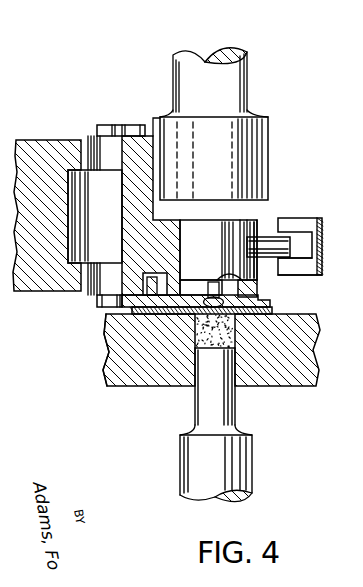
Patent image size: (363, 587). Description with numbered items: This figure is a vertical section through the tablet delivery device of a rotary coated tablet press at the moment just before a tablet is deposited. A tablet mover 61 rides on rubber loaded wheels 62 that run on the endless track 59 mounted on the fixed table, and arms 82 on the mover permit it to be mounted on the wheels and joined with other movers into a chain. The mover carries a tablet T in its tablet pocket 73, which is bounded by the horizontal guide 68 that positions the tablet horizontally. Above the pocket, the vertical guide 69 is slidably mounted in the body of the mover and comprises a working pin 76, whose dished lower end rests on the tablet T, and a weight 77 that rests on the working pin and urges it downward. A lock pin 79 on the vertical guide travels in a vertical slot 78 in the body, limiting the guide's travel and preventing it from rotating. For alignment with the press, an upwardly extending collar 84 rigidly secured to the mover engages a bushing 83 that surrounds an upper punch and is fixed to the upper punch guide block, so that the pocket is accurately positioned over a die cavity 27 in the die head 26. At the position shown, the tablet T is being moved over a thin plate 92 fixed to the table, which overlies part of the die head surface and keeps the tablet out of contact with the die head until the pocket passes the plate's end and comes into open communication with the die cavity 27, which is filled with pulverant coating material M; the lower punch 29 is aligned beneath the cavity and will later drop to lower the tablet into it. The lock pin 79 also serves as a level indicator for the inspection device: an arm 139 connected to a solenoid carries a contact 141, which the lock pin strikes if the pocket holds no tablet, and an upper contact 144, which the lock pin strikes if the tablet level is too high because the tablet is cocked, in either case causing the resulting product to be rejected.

The die head 26 is at (318, 369).
The die cavity 27 is at (237, 382).
The lower punch 29 is at (250, 477).
The endless track 59 is at (53, 292).
The tablet mover 61 is at (91, 291).
The wheel 62 is at (80, 140).
The horizontal guide 68 is at (112, 344).
The vertical guide 69 is at (210, 259).
The tablet pocket 73 is at (181, 293).
The working pin 76 is at (250, 287).
The weight 77 is at (242, 223).
The vertical slot 78 is at (255, 264).
The lock pin 79 is at (270, 240).
The arm 82 is at (97, 147).
The bushing 83 is at (265, 161).
The collar 84 is at (149, 146).
The thin plate 92 is at (133, 314).
The arm 139 is at (317, 236).
The contact 141 is at (302, 268).
The upper contact 144 is at (307, 222).
The coating material M is at (197, 338).
The tablet T is at (223, 290).